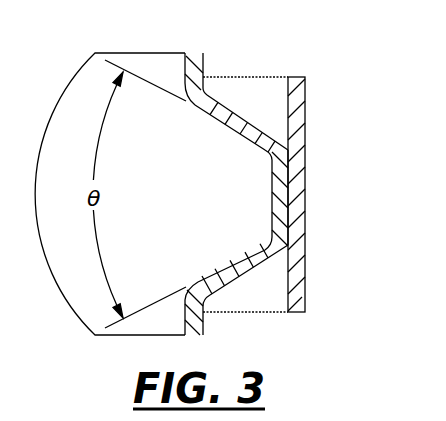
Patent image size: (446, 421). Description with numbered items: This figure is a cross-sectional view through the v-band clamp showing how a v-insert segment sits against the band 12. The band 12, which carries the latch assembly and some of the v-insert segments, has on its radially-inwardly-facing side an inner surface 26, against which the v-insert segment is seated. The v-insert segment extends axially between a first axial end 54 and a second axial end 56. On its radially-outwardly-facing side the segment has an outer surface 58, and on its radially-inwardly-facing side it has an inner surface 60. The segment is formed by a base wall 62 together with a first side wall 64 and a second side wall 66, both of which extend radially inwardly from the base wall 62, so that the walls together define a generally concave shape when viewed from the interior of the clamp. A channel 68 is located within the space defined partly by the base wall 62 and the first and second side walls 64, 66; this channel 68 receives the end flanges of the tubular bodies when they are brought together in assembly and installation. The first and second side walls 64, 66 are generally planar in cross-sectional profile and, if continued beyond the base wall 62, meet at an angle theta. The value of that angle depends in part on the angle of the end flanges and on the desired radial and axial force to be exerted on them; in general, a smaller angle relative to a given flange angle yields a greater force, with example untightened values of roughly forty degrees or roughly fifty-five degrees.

The band 12 is at (315, 108).
The inner surface 26 is at (277, 292).
The first axial end 54 is at (192, 58).
The second axial end 56 is at (195, 328).
The outer surface 58 is at (290, 196).
The inner surface 60 is at (271, 165).
The base wall 62 is at (289, 222).
The first side wall 64 is at (240, 118).
The second side wall 66 is at (238, 268).
The channel 68 is at (229, 211).